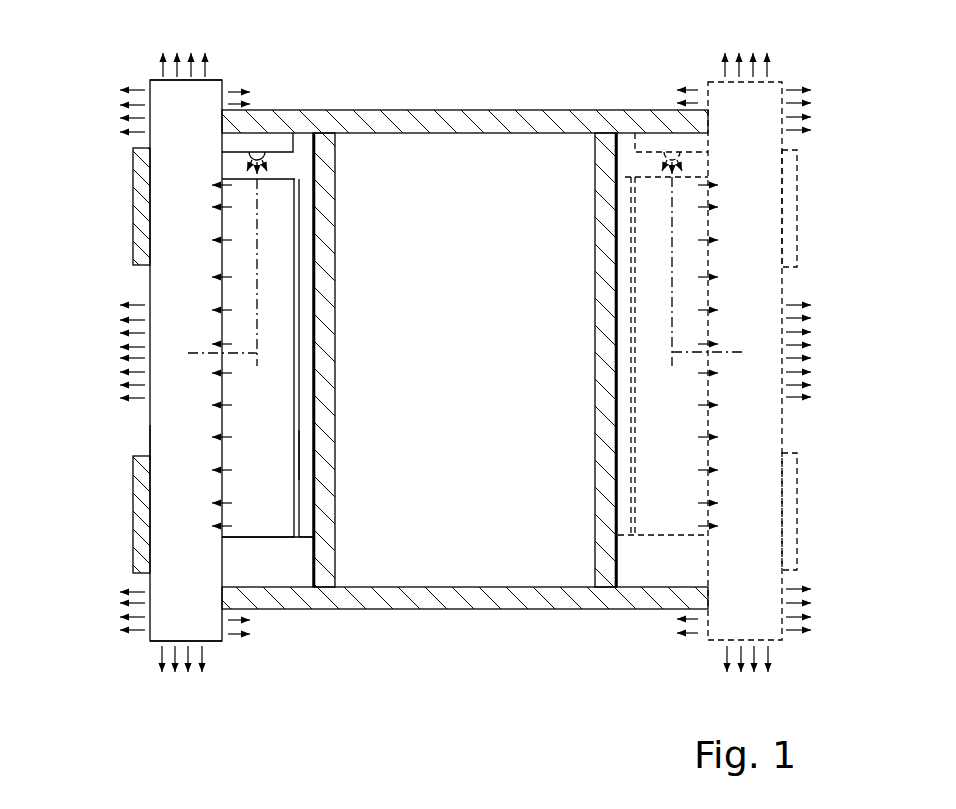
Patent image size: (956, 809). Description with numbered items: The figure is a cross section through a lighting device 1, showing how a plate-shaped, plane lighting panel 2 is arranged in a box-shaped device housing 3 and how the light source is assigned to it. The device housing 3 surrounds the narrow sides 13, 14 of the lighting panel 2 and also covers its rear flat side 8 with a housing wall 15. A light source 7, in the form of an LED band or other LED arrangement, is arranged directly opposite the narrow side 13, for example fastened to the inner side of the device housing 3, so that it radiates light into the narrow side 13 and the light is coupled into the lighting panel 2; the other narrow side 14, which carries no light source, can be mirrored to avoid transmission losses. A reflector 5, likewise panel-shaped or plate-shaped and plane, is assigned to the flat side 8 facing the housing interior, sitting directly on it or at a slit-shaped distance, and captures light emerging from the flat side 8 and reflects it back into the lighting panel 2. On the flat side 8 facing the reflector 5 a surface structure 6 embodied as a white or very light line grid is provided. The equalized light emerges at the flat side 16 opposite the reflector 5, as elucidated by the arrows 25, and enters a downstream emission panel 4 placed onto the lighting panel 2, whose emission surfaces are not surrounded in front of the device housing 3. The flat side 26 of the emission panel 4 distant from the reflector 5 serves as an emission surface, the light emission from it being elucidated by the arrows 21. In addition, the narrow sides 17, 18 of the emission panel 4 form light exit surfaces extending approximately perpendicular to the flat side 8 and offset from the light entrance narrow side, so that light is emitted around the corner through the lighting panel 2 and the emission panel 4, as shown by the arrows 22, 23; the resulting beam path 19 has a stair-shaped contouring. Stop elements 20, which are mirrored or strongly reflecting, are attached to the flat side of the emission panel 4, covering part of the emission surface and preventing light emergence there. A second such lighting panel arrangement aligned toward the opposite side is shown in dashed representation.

The lighting device 1 is at (110, 658).
The lighting panel 2 is at (279, 528).
The device housing 3 is at (482, 94).
The emission panel 4 is at (156, 638).
The reflector 5 is at (308, 529).
The surface structure 6 is at (299, 455).
The light source 7 is at (259, 151).
The flat side 8 is at (299, 283).
The narrow side 13 is at (288, 179).
The narrow side 14 is at (235, 540).
The housing wall 15 is at (325, 212).
The flat side 16 is at (222, 423).
The narrow side 17 is at (156, 78).
The narrow side 18 is at (216, 643).
The beam path 19 is at (258, 310).
The stop elements 20 is at (135, 193).
The arrows 21 is at (132, 303).
The arrows 22 is at (203, 71).
The arrows 23 is at (236, 89).
The arrows 25 is at (224, 471).
The flat side 26 is at (148, 441).